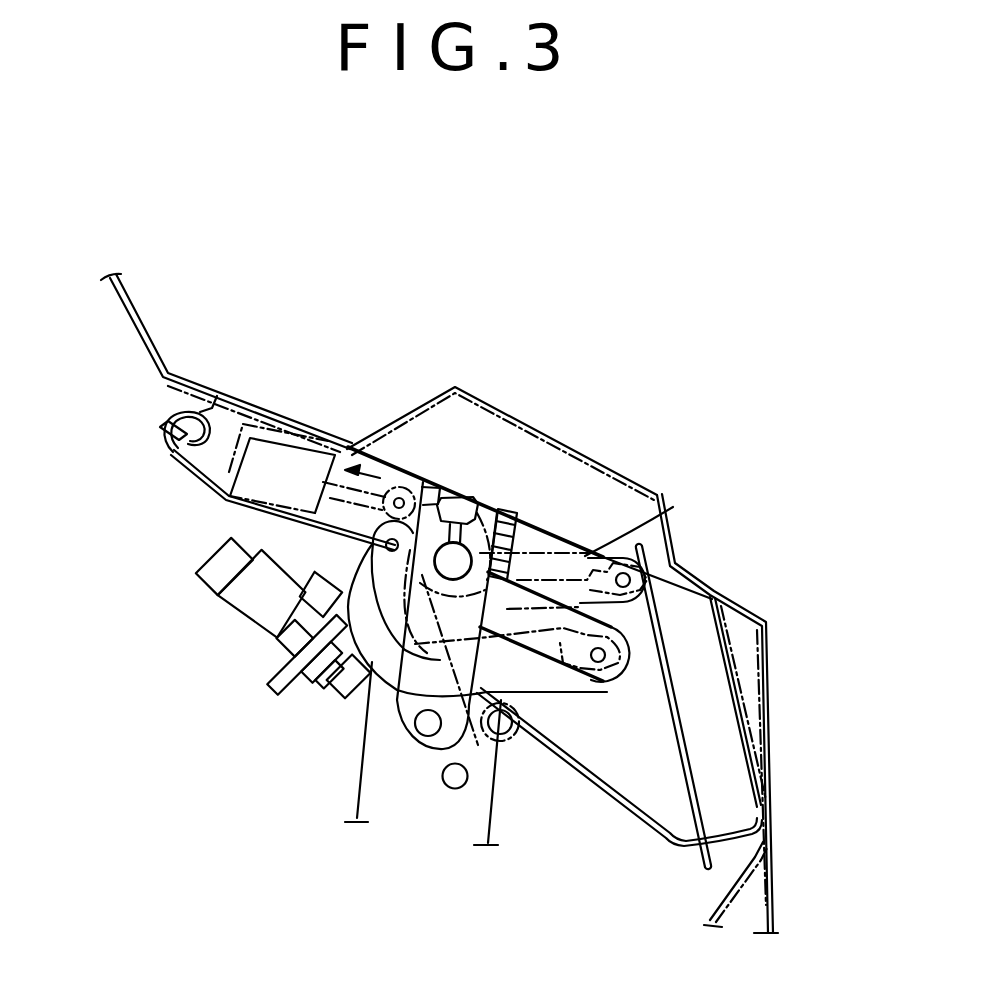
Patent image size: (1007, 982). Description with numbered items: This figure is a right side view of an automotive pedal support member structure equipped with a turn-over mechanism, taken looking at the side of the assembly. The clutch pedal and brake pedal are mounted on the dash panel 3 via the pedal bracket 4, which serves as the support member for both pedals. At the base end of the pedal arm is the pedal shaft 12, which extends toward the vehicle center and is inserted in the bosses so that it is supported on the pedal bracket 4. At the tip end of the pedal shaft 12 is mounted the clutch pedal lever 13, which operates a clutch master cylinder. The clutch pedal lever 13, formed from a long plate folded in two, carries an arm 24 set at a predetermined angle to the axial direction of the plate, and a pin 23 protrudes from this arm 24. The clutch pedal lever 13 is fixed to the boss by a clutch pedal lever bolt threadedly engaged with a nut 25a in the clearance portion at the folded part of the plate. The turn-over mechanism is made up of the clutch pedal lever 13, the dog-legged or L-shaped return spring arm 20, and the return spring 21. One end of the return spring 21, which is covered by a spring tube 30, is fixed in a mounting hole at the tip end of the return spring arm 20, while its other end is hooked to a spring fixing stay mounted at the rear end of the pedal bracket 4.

The dash panel 3 is at (642, 479).
The pedal bracket 4 is at (707, 857).
The pedal shaft 12 is at (432, 532).
The clutch pedal lever 13 is at (400, 703).
The return spring arm 20 is at (373, 662).
The return spring 21 is at (170, 449).
The pin 23 is at (603, 663).
The arm 24 is at (595, 553).
The nut 25a is at (522, 588).
The spring tube 30 is at (238, 510).